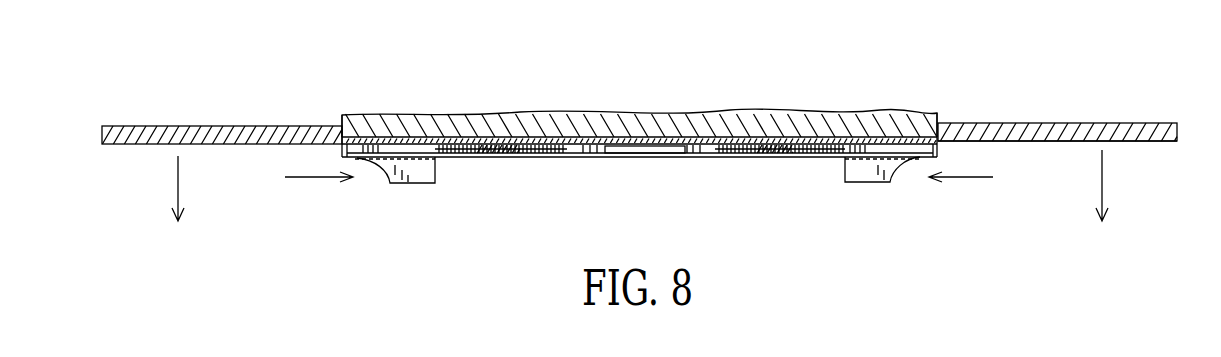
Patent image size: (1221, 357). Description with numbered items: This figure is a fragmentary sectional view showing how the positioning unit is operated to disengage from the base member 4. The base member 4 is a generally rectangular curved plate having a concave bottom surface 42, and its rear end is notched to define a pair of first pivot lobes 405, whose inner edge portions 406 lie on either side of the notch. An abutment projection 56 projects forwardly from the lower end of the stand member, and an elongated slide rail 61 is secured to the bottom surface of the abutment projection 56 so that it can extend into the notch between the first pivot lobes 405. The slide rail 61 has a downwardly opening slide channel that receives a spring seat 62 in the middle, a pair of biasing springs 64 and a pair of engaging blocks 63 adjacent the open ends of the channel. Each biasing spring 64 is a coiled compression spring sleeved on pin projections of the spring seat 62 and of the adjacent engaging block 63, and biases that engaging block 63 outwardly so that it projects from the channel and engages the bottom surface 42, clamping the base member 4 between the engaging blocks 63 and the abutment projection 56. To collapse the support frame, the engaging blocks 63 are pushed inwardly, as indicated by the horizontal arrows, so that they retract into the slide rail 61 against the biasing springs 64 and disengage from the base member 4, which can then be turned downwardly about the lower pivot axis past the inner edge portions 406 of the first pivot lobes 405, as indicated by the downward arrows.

The base member 4 is at (1093, 123).
The concave bottom surface 42 is at (1067, 143).
The first pivot lobes 405 is at (255, 132).
The inner edge portions 406 is at (344, 128).
The abutment projection 56 is at (937, 112).
The slide rail 61 is at (707, 158).
The spring seat 62 is at (665, 158).
The engaging blocks 63 is at (412, 167).
The biasing springs 64 is at (497, 157).